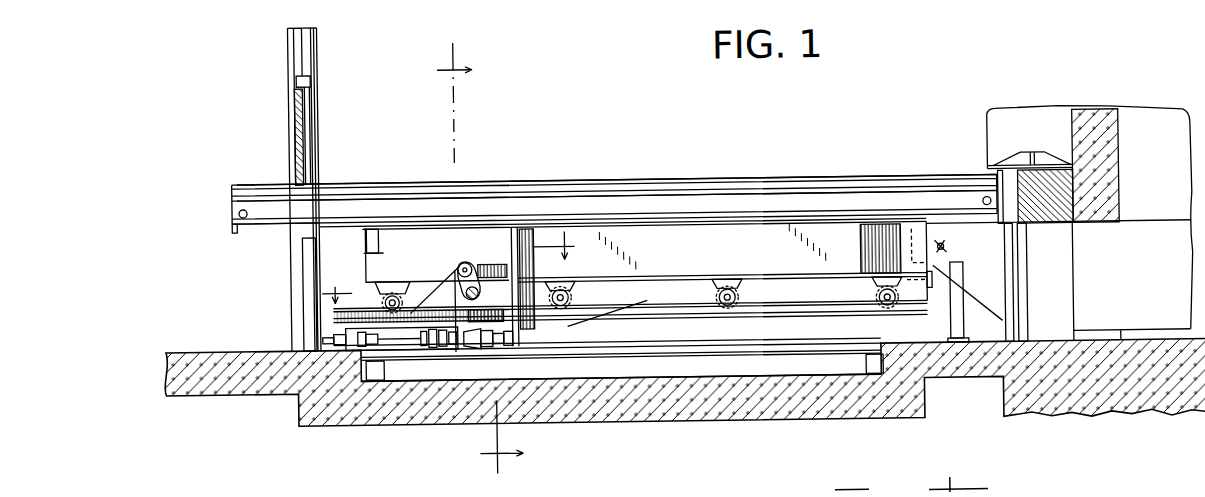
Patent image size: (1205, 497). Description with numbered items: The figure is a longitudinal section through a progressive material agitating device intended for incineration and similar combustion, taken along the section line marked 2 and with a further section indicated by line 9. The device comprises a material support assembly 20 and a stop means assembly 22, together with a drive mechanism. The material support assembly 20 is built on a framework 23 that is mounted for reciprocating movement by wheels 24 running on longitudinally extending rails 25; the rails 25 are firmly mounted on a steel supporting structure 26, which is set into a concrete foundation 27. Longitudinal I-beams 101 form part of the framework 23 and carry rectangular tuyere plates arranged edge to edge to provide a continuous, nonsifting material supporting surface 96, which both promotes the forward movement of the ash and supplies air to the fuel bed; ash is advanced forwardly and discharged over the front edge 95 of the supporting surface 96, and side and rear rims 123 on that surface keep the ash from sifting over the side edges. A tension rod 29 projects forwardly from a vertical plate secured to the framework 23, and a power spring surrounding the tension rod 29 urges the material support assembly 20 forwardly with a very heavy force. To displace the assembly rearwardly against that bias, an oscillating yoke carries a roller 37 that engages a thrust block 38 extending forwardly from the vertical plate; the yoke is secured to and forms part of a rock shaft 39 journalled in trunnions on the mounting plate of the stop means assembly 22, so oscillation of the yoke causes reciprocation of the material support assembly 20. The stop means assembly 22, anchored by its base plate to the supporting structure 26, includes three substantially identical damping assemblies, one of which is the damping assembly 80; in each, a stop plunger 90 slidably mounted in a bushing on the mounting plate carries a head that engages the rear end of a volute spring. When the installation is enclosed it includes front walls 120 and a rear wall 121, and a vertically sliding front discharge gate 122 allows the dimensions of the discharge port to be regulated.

The material support assembly 20 is at (753, 160).
The stop means assembly 22 is at (341, 330).
The framework 23 is at (672, 248).
The wheels 24 is at (574, 296).
The longitudinally extending rails 25 is at (783, 314).
The steel supporting structure 26 is at (776, 370).
The concrete foundation 27 is at (841, 408).
The tension rod 29 is at (486, 306).
The roller 37 is at (458, 263).
The thrust block 38 is at (488, 263).
The rock shaft 39 is at (466, 292).
The damping assembly 80 is at (432, 341).
The stop plunger 90 is at (488, 338).
The front edge 95 is at (233, 188).
The material supporting surface 96 is at (858, 191).
The longitudinal I-beams 101 is at (268, 222).
The front walls 120 is at (291, 49).
The rear wall 121 is at (1105, 119).
The vertically sliding front discharge gate 122 is at (297, 113).
The side and rear rims 123 is at (579, 181).
The section line 2- 2 is at (469, 258).
The section line 9- 9 is at (455, 267).